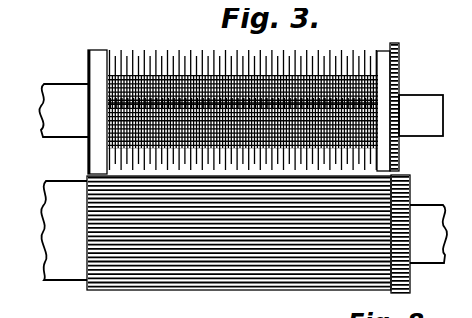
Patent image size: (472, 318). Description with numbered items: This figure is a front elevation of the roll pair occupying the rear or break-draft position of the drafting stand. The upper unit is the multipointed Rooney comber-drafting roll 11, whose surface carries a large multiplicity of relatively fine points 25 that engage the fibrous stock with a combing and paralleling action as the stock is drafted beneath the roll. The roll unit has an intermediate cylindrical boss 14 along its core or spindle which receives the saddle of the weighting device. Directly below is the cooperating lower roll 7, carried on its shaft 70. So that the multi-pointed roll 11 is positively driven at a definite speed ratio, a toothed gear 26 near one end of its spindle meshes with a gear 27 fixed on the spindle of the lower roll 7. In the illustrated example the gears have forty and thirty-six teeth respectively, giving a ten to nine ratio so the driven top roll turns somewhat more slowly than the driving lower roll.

The multipointed Rooney comber-drafting roll 11 is at (353, 37).
The points 25 is at (177, 47).
The toothed gear 26 is at (392, 57).
The intermediate cylindrical boss 14 is at (55, 85).
The lower roll 7 is at (235, 268).
The gear 27 is at (404, 174).
The shaft 70 is at (428, 202).